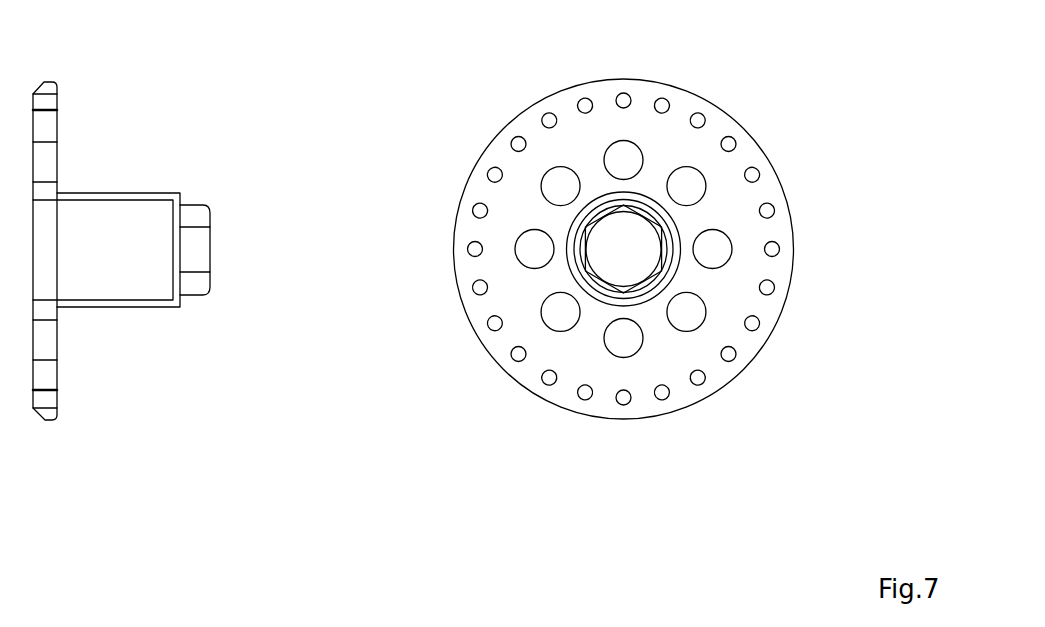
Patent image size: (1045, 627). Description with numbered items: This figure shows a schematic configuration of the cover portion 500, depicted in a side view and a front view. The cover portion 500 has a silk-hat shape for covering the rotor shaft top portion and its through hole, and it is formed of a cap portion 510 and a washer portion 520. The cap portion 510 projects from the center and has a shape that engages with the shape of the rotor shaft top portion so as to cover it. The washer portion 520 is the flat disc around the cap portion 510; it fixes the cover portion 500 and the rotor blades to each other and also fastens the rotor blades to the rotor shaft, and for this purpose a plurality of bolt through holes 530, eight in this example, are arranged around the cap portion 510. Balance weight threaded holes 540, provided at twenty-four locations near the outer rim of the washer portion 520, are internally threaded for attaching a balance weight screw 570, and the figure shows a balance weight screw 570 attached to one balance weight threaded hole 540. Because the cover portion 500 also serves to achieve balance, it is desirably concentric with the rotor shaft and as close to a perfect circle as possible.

The cover portion 500 is at (57, 75).
The cap portion 510 is at (120, 193).
The washer portion 520 is at (47, 424).
The bolt through holes 530 is at (58, 340).
The balance weight threaded holes 540 is at (58, 403).
The balance weight screw 570 is at (627, 93).